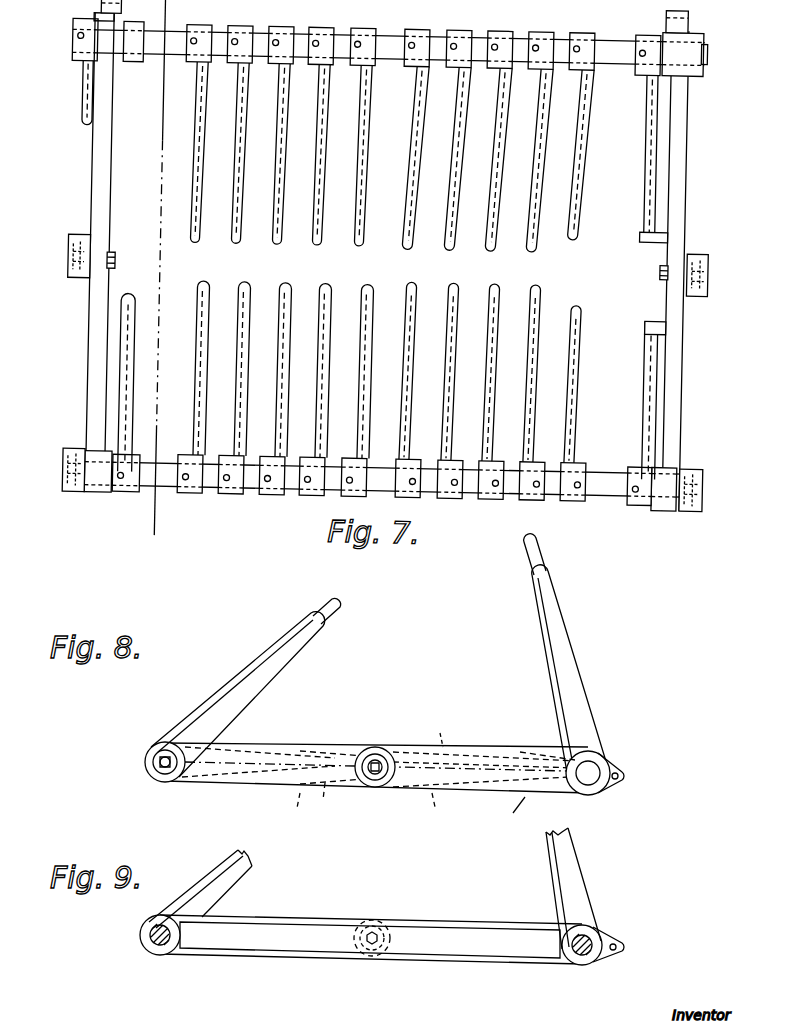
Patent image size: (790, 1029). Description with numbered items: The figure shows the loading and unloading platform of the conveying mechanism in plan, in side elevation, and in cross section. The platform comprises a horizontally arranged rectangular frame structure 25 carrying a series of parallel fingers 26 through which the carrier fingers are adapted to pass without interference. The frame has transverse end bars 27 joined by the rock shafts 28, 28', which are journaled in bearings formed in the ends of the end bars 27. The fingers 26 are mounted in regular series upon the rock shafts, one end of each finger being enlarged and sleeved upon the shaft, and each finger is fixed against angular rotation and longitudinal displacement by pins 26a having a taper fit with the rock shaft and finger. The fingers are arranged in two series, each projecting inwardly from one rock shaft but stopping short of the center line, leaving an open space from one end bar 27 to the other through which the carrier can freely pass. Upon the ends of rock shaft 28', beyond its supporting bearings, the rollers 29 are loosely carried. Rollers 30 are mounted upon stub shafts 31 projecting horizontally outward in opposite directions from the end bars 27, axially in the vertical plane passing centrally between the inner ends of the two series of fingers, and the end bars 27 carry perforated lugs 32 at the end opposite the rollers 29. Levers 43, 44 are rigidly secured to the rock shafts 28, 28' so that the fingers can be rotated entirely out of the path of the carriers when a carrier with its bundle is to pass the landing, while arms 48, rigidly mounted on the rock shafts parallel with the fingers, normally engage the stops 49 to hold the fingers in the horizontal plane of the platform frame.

In FIG. 7, the rectangular frame structure 25 is at (78, 111).
In FIG. 8, the rectangular frame structure 25 is at (543, 733).
In FIG. 7, the fingers 26 is at (325, 242).
In FIG. 8, the fingers 26 is at (289, 821).
In FIG. 7, the pins 26a is at (271, 483).
In FIG. 7, the transverse end bars 27 is at (676, 407).
In FIG. 8, the transverse end bars 27 is at (347, 747).
In FIG. 9, the transverse end bars 27 is at (327, 945).
In FIG. 7, the rock shaft 28 is at (389, 273).
In FIG. 8, the rock shaft 28 is at (539, 751).
In FIG. 9, the rock shaft 28 is at (578, 967).
In FIG. 7, the rock shaft 28' is at (384, 506).
In FIG. 8, the rock shaft 28' is at (158, 748).
In FIG. 9, the rock shaft 28' is at (159, 957).
In FIG. 7, the rollers 29 is at (83, 499).
In FIG. 8, the rollers 29 is at (170, 770).
In FIG. 7, the rollers 30 is at (80, 275).
In FIG. 8, the rollers 30 is at (377, 786).
In FIG. 9, the rollers 30 is at (362, 920).
In FIG. 7, the stub shafts 31 is at (116, 266).
In FIG. 8, the stub shafts 31 is at (376, 763).
In FIG. 9, the stub shafts 31 is at (376, 932).
In FIG. 7, the perforated lugs 32 is at (110, 19).
In FIG. 8, the perforated lugs 32 is at (619, 775).
In FIG. 9, the perforated lugs 32 is at (618, 945).
In FIG. 7, the lever 43 is at (85, 114).
In FIG. 8, the lever 43 is at (277, 663).
In FIG. 9, the lever 43 is at (238, 846).
In FIG. 7, the lever 44 is at (125, 396).
In FIG. 8, the lever 44 is at (558, 653).
In FIG. 9, the lever 44 is at (572, 883).
In FIG. 7, the arms 48 is at (654, 192).
In FIG. 8, the arms 48 is at (519, 818).
In FIG. 7, the stops 49 is at (663, 224).
In FIG. 8, the stops 49 is at (393, 811).